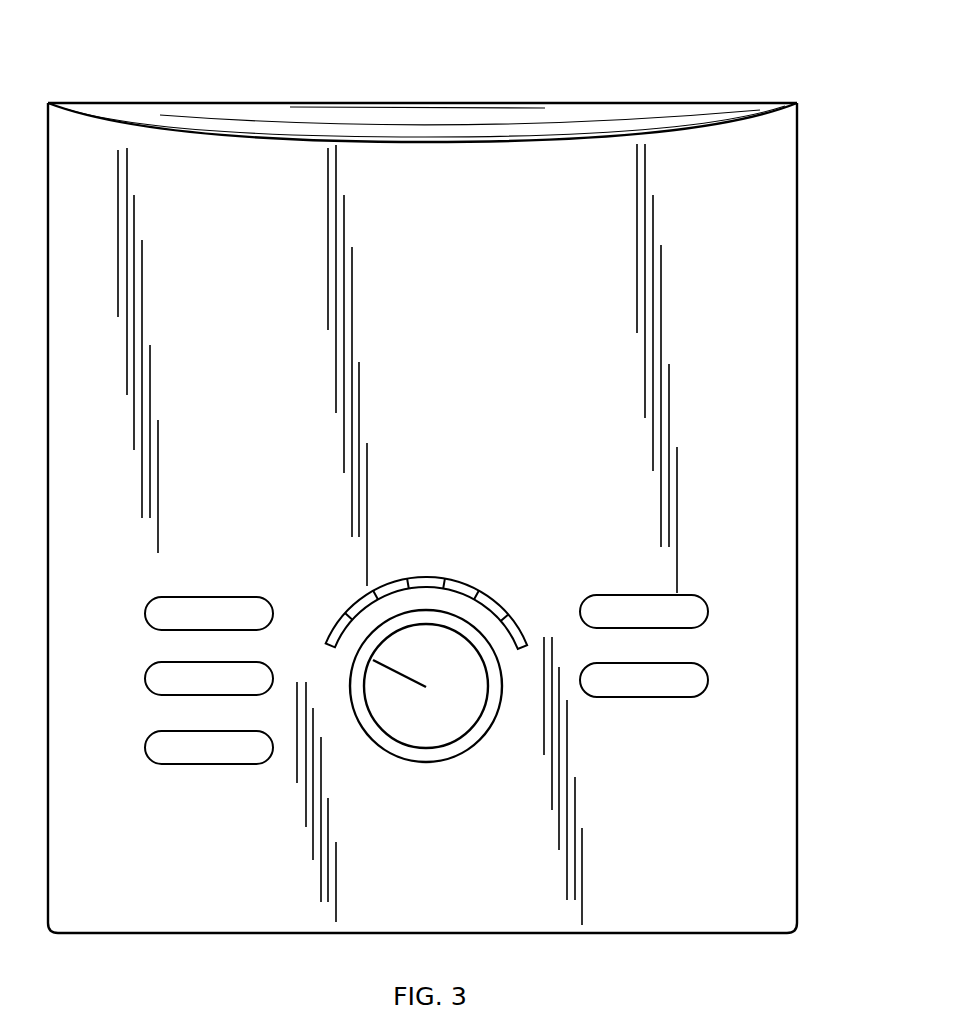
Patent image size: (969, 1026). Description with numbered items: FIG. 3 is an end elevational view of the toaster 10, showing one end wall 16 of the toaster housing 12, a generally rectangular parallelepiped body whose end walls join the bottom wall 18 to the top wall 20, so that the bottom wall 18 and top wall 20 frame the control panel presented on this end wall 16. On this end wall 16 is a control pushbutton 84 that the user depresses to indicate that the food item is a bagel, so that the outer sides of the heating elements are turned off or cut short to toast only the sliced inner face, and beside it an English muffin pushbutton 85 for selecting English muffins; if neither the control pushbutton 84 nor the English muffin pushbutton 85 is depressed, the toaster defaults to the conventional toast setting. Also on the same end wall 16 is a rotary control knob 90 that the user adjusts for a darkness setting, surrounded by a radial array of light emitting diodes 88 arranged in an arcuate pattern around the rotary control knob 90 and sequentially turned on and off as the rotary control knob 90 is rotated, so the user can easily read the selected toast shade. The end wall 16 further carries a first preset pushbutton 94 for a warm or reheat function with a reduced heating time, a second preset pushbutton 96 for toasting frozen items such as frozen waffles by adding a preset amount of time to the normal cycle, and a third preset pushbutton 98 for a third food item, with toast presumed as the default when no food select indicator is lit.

The toaster 10 is at (721, 64).
The toaster housing 12 is at (815, 216).
The end wall 16 is at (797, 445).
The bottom wall 18 is at (652, 933).
The top wall 20 is at (473, 103).
The control pushbutton 84 is at (685, 595).
The English muffin pushbutton 85 is at (700, 667).
The light emitting diodes 88 is at (445, 580).
The rotary control knob 90 is at (443, 735).
The first preset pushbutton 94 is at (180, 597).
The second preset pushbutton 96 is at (163, 662).
The third preset pushbutton 98 is at (165, 732).